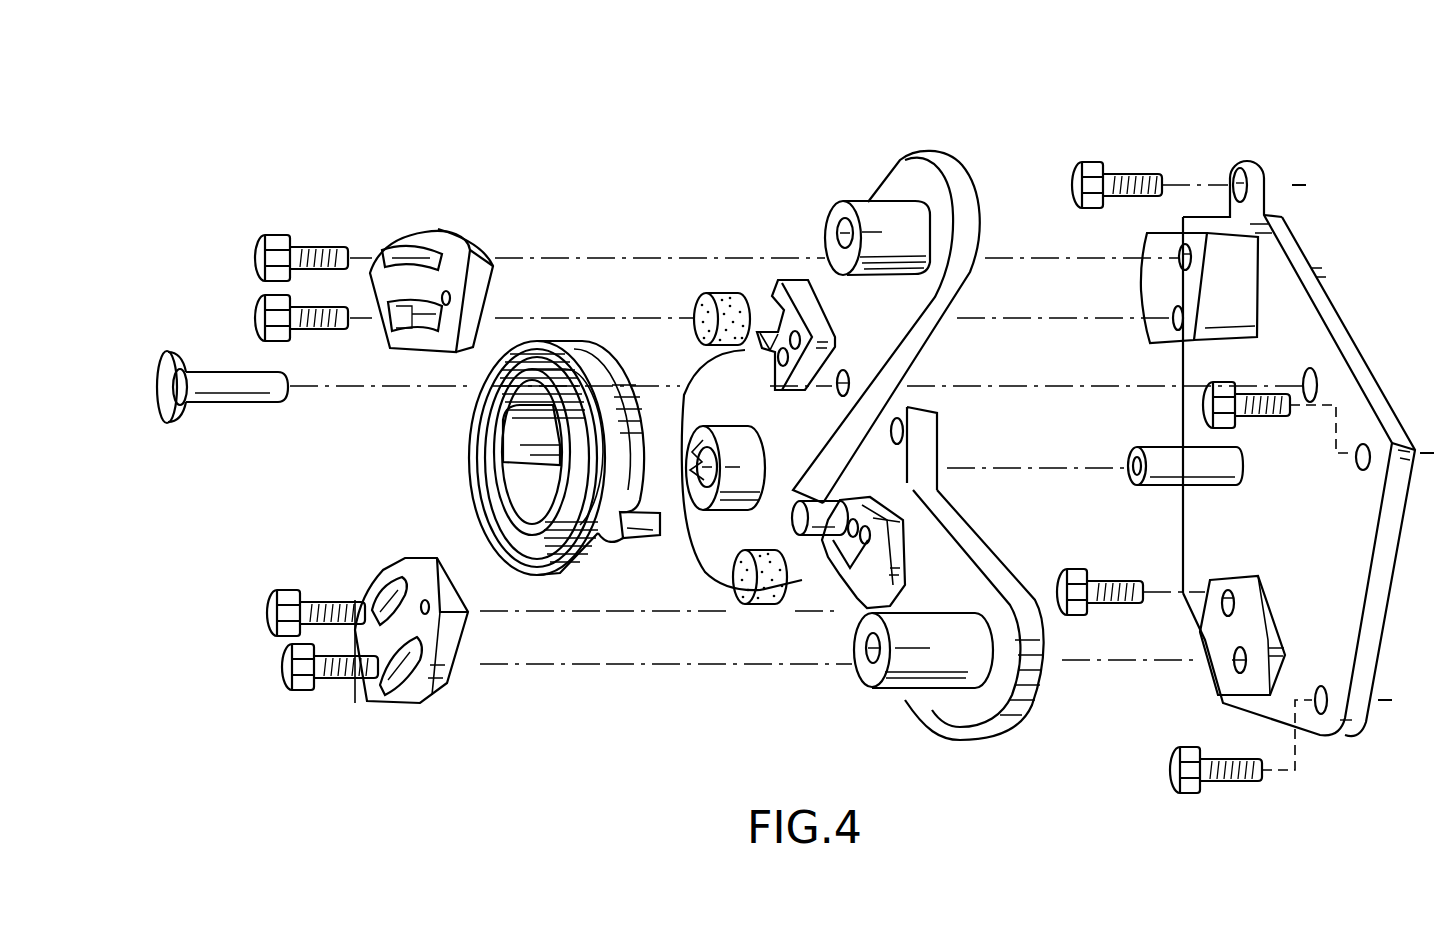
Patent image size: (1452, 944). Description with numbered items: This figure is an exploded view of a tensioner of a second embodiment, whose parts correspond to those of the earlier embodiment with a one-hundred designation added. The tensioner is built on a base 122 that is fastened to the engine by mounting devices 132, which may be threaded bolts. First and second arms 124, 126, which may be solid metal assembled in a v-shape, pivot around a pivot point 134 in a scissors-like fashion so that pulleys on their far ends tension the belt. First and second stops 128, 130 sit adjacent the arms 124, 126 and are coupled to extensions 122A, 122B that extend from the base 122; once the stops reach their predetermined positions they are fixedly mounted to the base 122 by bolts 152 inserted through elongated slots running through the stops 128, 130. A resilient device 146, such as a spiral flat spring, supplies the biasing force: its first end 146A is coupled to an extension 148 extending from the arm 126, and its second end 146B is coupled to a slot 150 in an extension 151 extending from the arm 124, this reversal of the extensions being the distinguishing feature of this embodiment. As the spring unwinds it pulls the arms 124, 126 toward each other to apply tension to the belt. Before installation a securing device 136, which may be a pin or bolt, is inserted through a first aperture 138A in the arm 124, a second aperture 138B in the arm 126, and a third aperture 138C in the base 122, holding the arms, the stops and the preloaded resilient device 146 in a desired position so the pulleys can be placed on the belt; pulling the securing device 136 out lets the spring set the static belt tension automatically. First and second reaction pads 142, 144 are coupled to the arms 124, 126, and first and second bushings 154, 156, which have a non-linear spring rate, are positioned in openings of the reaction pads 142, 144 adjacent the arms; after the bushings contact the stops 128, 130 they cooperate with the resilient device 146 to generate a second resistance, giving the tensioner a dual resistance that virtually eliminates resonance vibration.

The base 122 is at (1310, 355).
The extension 122A is at (1217, 675).
The extension 122B is at (1150, 323).
The first arm 124 is at (897, 161).
The second arm 126 is at (958, 724).
The first stop 128 is at (390, 336).
The second stop 130 is at (358, 692).
The mounting devices 132 is at (1122, 172).
The pivot point 134 is at (1167, 485).
The securing device 136 is at (240, 406).
The first aperture 138A is at (870, 385).
The second aperture 138B is at (903, 430).
The third aperture 138C is at (1313, 378).
The first reaction pad 142 is at (815, 317).
The second reaction pad 144 is at (887, 573).
The resilient device 146 is at (473, 394).
The first end of resilient device 146A is at (636, 527).
The second end of resilient device 146B is at (527, 478).
The extension 148 is at (826, 530).
The slot 150 is at (688, 380).
The extension 151 is at (707, 497).
The bolts 152 is at (260, 260).
The first bushing 154 is at (697, 300).
The second bushing 156 is at (775, 593).